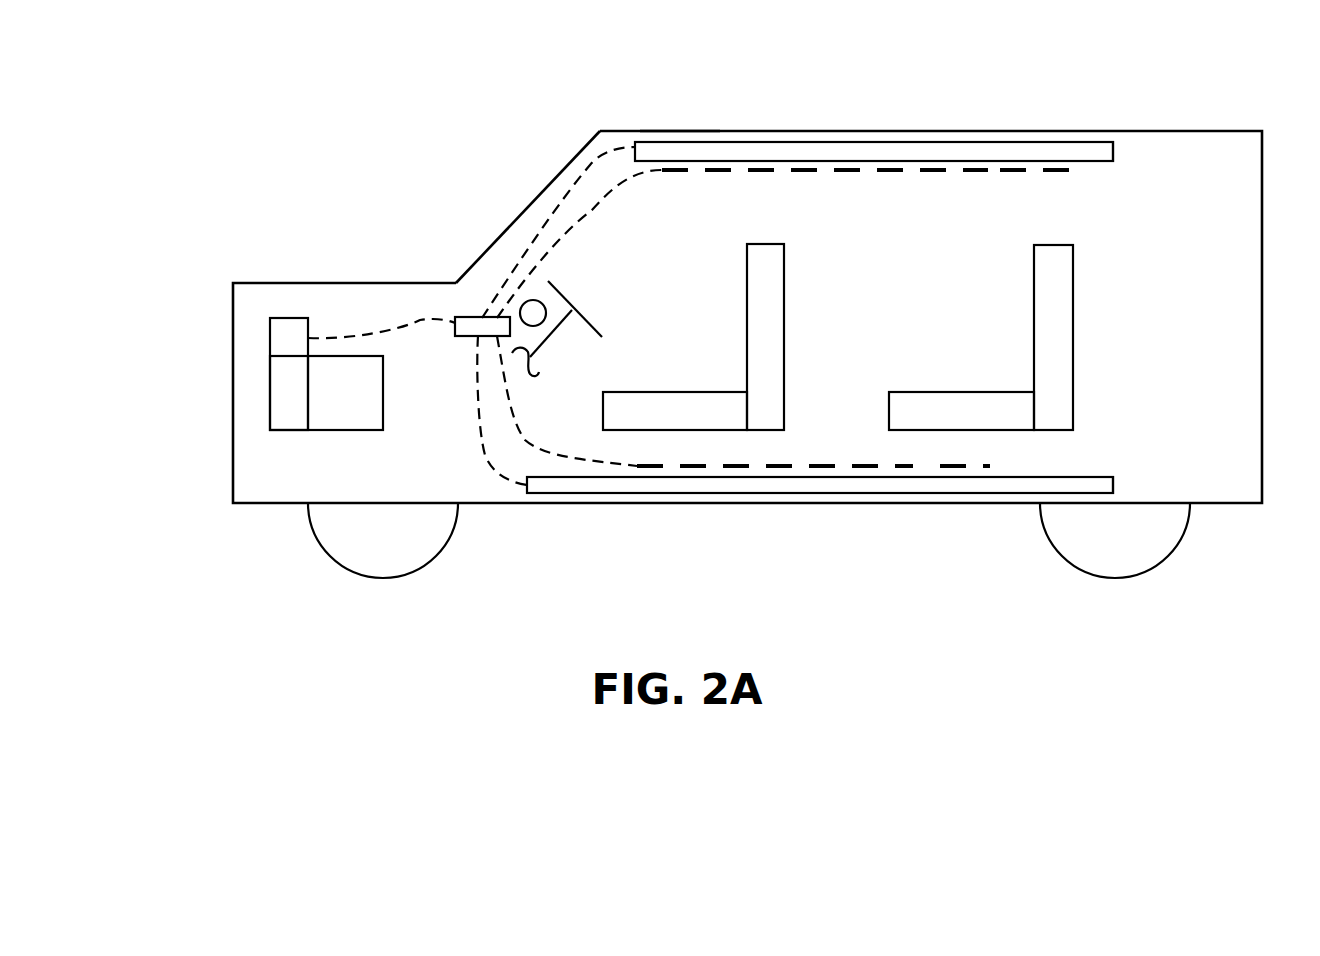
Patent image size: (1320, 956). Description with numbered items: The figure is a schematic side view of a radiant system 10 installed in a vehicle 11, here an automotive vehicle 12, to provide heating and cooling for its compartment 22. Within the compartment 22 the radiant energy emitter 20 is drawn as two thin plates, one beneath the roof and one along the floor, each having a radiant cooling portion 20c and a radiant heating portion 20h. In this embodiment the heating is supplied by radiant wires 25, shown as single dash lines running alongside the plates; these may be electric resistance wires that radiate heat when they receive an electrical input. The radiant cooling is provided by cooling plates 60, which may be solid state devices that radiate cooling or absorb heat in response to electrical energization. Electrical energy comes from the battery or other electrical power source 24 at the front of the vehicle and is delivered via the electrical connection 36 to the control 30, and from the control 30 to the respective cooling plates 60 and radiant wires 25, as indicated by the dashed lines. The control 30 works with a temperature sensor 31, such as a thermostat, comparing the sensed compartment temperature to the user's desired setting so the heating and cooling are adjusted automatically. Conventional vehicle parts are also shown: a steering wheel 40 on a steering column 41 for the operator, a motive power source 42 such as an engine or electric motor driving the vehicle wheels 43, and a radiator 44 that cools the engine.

The radiant system 10 is at (747, 279).
The vehicle 11 is at (747, 279).
The automotive vehicle 12 is at (677, 131).
The radiant energy emitter 20 is at (820, 312).
The radiant cooling portion 20c is at (1137, 149).
The radiant heating portion 20h is at (1087, 186).
The compartment 22 is at (495, 230).
The electrical power source 24 is at (270, 338).
The radiant wires 25 is at (876, 175).
The control 30 is at (467, 312).
The temperature sensor 31 is at (534, 299).
The electrical connection 36 is at (360, 330).
The steering wheel 40 is at (590, 323).
The steering column 41 is at (553, 332).
The motive power source 42 is at (383, 400).
The vehicle wheels 43 is at (423, 566).
The radiator 44 is at (270, 398).
The cooling plates 60 is at (718, 142).